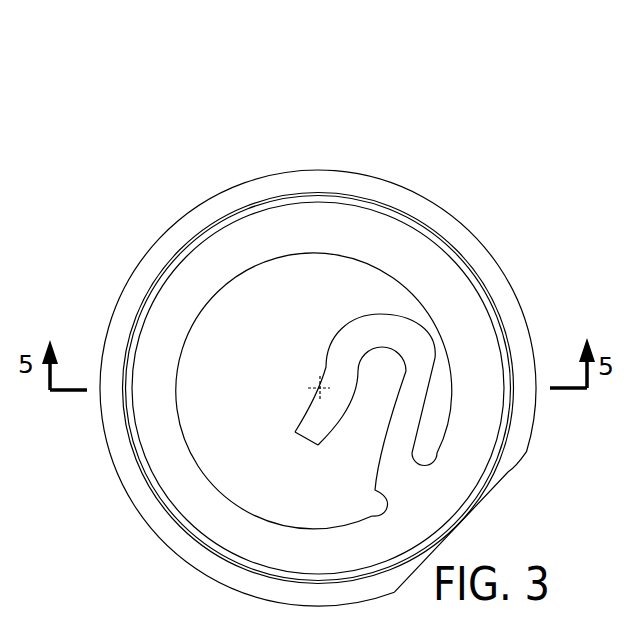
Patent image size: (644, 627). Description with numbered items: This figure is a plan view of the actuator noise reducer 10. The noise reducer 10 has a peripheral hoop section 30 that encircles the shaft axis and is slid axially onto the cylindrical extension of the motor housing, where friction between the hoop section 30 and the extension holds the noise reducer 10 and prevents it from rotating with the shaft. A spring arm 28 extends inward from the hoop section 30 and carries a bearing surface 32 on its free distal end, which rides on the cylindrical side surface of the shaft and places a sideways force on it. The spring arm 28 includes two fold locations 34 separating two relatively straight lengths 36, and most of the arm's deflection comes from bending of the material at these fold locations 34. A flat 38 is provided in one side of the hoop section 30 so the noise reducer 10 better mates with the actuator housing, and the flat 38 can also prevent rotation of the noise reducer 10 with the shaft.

The noise reducer 10 is at (287, 138).
The spring arm 28 is at (323, 425).
The hoop section 30 is at (452, 280).
The bearing surface 32 is at (320, 393).
The fold locations 34 is at (377, 333).
The straight lengths 36 is at (342, 363).
The flat 38 is at (508, 472).